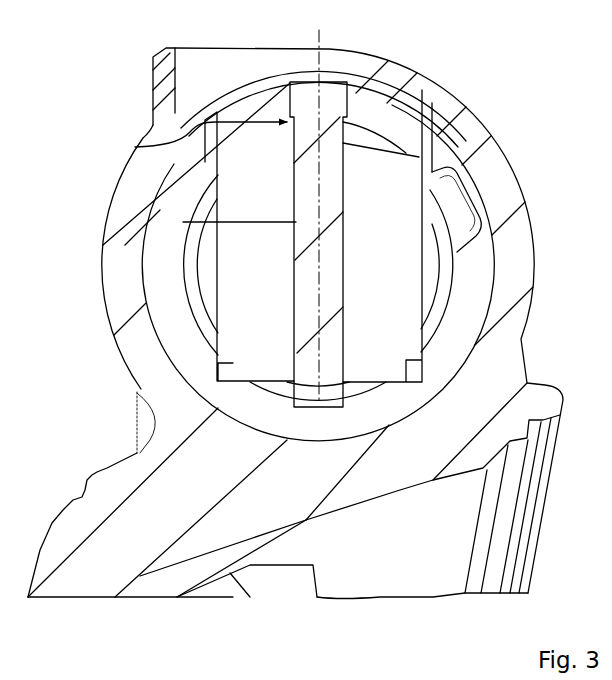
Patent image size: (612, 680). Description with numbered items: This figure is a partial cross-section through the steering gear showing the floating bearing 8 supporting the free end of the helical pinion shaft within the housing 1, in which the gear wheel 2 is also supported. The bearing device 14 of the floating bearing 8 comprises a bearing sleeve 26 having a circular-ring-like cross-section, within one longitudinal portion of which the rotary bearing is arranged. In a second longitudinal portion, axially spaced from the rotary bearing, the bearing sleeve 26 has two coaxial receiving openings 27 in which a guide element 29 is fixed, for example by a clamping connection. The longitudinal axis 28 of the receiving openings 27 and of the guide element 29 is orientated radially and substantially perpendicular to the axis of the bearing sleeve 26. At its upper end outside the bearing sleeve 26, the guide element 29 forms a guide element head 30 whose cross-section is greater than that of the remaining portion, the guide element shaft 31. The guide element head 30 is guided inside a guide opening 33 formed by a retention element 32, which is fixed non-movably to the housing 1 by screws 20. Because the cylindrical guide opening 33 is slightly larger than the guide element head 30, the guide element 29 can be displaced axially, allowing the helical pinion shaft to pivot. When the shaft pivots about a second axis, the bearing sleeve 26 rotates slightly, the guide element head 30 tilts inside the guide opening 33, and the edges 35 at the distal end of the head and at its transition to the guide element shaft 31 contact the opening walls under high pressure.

The housing 1 is at (193, 78).
The gear wheel 2 is at (279, 585).
The floating bearing 8 is at (403, 88).
The bearing device 14 is at (359, 65).
The screws 20 is at (432, 137).
The bearing sleeve 26 is at (170, 355).
The receiving openings 27 is at (289, 142).
The longitudinal axis 28 is at (313, 278).
The guide element 29 is at (183, 242).
The guide element head 30 is at (307, 92).
The guide element shaft 31 is at (294, 312).
The retention element 32 is at (401, 232).
The guide opening 33 is at (353, 119).
The edges 35 is at (285, 84).